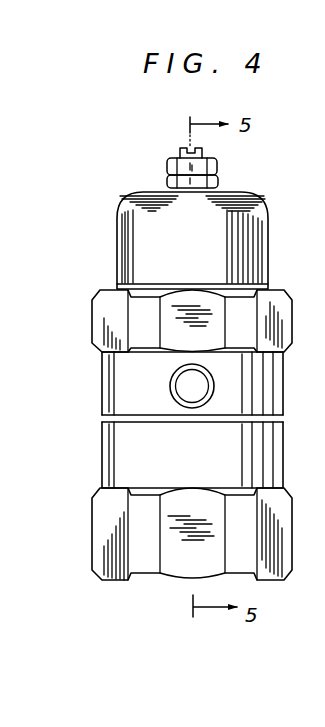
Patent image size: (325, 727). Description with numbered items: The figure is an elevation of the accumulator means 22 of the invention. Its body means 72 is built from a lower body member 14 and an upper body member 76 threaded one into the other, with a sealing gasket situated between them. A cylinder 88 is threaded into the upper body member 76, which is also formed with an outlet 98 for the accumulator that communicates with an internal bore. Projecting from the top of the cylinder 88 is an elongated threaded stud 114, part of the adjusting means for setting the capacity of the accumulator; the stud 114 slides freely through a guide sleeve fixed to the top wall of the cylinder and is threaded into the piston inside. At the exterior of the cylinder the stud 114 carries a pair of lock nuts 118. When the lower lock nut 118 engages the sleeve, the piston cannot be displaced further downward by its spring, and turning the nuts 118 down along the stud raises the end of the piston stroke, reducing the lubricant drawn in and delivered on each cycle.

The valve body lower section 14 is at (181, 456).
The accumulator means 22 is at (104, 240).
The body means 72 is at (92, 440).
The upper body member 76 is at (155, 411).
The cylinder 88 is at (253, 226).
The outlet 98 is at (204, 388).
The threaded stud 114 is at (179, 151).
The lock nuts 118 is at (167, 170).